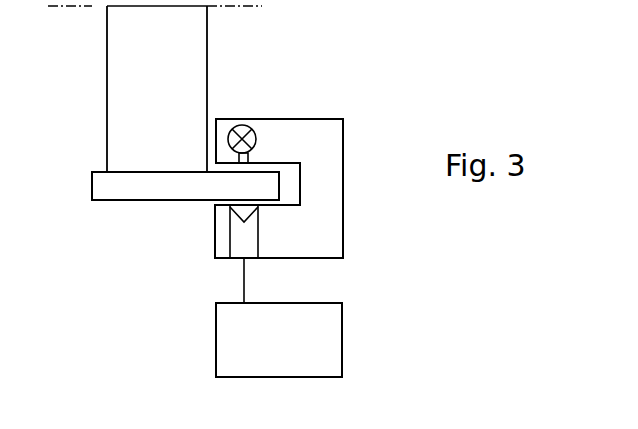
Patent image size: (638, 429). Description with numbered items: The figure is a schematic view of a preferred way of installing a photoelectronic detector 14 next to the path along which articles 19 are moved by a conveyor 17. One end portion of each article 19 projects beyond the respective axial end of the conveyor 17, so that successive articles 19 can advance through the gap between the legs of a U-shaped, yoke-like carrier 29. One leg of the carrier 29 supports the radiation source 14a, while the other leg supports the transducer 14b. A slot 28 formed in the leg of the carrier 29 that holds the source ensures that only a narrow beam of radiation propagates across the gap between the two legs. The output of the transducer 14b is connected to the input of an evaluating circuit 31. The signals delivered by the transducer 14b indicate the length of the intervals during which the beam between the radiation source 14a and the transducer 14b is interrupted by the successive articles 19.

The detector 14 is at (286, 176).
The radiation source 14a is at (267, 111).
The transducer 14b is at (236, 240).
The conveyor 17 is at (123, 87).
The article 19 is at (161, 185).
The slot 28 is at (251, 160).
The carrier 29 is at (333, 195).
The evaluating circuit 31 is at (325, 343).